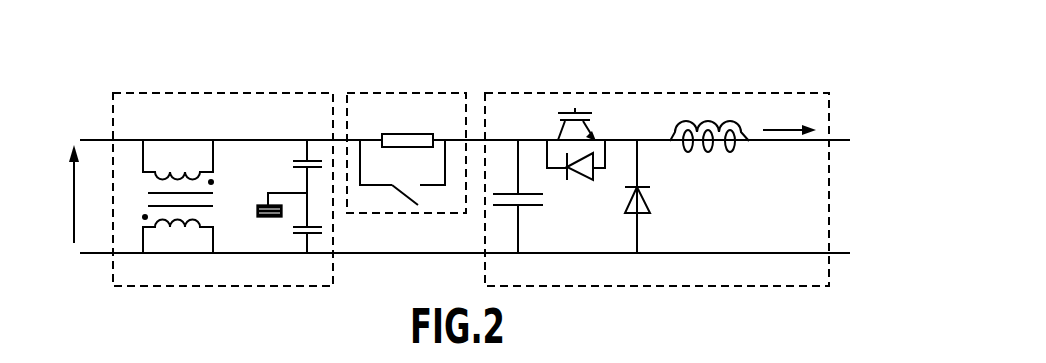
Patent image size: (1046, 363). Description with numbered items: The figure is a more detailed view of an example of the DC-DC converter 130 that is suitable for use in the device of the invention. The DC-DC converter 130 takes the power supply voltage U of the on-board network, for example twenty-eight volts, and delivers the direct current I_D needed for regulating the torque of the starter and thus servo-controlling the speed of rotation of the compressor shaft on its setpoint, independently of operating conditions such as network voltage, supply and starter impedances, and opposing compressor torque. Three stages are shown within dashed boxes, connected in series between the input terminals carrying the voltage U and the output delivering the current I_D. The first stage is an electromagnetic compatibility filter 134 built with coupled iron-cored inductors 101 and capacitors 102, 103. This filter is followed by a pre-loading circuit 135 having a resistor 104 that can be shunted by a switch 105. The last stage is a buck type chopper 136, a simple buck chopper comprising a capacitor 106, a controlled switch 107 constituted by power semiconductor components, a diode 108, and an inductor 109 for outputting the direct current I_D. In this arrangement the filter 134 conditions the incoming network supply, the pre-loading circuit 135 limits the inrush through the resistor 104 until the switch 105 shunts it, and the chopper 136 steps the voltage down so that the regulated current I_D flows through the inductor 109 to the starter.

The DC-DC converter 130 is at (162, 57).
The electromagnetic compatibility filter 134 is at (211, 93).
The pre-loading circuit 135 is at (391, 93).
The buck type chopper 136 is at (637, 93).
The coupled iron-cored inductors 101 is at (175, 160).
The capacitor 102 is at (293, 162).
The capacitor 103 is at (292, 230).
The resistor 104 is at (410, 140).
The switch 105 is at (403, 186).
The capacitor 106 is at (535, 208).
The controlled switch 107 is at (540, 122).
The diode 108 is at (648, 203).
The inductor 109 is at (737, 152).